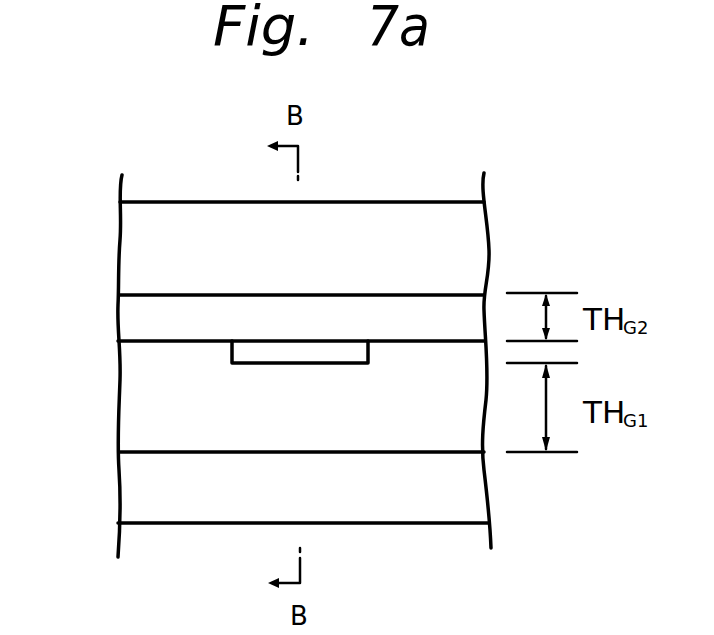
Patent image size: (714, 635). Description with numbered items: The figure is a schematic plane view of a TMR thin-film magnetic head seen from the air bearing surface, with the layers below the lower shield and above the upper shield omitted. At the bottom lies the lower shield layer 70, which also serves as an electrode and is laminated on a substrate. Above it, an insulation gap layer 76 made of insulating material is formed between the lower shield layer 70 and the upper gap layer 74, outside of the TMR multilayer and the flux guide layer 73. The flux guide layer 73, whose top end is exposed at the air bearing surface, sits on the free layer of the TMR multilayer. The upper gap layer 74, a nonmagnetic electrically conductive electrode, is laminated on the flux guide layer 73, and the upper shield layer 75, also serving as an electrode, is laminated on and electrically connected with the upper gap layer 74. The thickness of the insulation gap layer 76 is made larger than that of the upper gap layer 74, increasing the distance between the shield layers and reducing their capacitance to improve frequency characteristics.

The upper shield layer 75 is at (158, 240).
The upper gap layer 74 is at (158, 314).
The flux guide layer 73 is at (257, 351).
The insulation gap layer 76 is at (160, 424).
The lower shield layer 70 is at (160, 497).